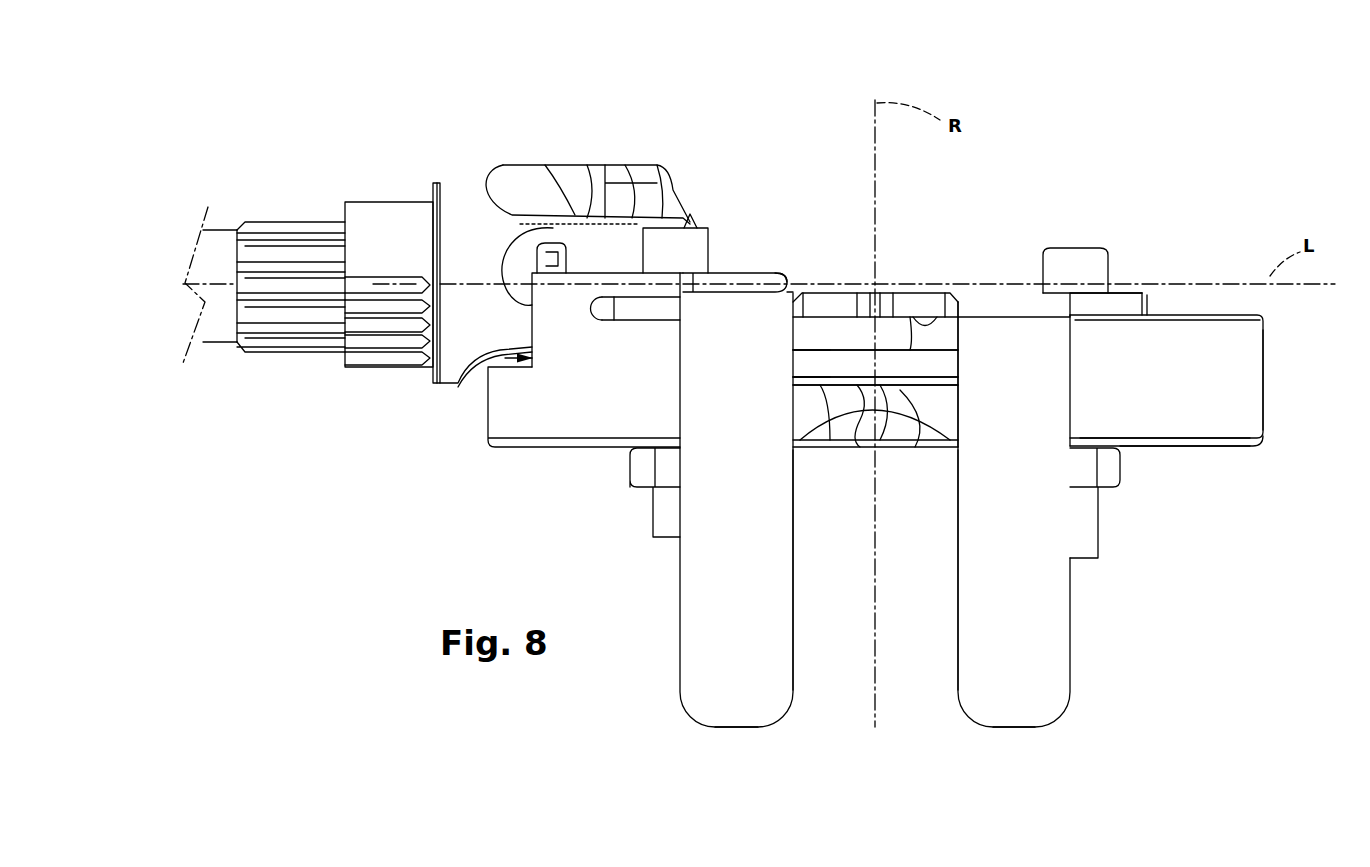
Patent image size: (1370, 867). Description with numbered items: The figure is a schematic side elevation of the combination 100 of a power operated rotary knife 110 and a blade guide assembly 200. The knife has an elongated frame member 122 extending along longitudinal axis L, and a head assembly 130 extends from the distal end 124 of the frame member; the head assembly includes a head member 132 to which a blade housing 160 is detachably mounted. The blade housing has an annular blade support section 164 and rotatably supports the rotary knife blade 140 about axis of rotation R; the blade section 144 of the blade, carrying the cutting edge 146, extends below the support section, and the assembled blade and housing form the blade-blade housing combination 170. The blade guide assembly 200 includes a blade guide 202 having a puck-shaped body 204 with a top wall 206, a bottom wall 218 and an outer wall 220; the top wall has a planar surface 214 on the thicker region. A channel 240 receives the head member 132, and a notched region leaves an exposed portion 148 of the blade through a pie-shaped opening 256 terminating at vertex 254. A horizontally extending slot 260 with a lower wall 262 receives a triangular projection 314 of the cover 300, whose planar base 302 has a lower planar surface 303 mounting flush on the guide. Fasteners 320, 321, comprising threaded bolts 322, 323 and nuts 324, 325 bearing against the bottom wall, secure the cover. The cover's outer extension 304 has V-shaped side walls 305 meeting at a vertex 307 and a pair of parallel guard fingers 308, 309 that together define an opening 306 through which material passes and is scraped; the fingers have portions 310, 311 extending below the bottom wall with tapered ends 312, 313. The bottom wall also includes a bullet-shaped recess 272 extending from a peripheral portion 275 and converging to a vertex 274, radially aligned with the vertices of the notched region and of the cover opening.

The combination 100 is at (1110, 83).
The power operated rotary knife 110 is at (368, 163).
The elongated frame member 122 is at (222, 212).
The distal end 124 is at (413, 200).
The head assembly 130 is at (567, 150).
The head member 132 is at (576, 186).
The top wall 206 is at (612, 270).
The planar surface 214 is at (632, 212).
The threaded bolt 323 is at (692, 219).
The fastener 321 is at (714, 241).
The V-shaped side walls 305 is at (820, 328).
The blade housing 160 is at (838, 330).
The annular blade support section 164 is at (818, 325).
The vertex 307 is at (878, 296).
The blade-blade housing combination 170 is at (923, 303).
The lower planar surface 303 is at (905, 323).
The outer extension 304 is at (1010, 300).
The threaded bolt 322 is at (1073, 258).
The fastener 320 is at (1101, 246).
The blade guide assembly 200 is at (1191, 238).
The base 302 is at (1151, 297).
The cover 300 is at (1152, 306).
The blade guide 202 is at (1268, 363).
The outer wall 220 is at (1243, 407).
The puck-shaped body 204 is at (1250, 424).
The bottom wall 218 is at (1209, 450).
The nut 324 is at (1088, 470).
The cutting edge 146 is at (955, 357).
The exposed portion 148 is at (953, 372).
The pie-shaped opening 256 is at (933, 407).
The peripheral portion 275 is at (900, 426).
The vertex 274 is at (880, 456).
The vertex 254 is at (858, 436).
The bullet-shaped recess 272 is at (838, 450).
The rotary knife blade 140 is at (820, 406).
The blade section 144 is at (821, 381).
The opening 306 is at (801, 357).
The triangular projection 314 is at (662, 316).
The lower wall 262 is at (672, 311).
The horizontally extending slot 260 is at (612, 307).
The channel 240 is at (458, 388).
The nut 325 is at (657, 468).
The portion 310 is at (718, 592).
The guard finger 308 is at (713, 658).
The tapered end 312 is at (735, 728).
The portion 311 is at (1040, 580).
The guard finger 309 is at (1051, 643).
The tapered end 313 is at (1010, 730).